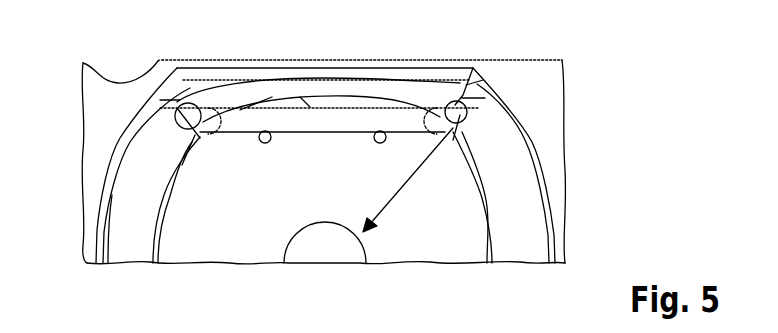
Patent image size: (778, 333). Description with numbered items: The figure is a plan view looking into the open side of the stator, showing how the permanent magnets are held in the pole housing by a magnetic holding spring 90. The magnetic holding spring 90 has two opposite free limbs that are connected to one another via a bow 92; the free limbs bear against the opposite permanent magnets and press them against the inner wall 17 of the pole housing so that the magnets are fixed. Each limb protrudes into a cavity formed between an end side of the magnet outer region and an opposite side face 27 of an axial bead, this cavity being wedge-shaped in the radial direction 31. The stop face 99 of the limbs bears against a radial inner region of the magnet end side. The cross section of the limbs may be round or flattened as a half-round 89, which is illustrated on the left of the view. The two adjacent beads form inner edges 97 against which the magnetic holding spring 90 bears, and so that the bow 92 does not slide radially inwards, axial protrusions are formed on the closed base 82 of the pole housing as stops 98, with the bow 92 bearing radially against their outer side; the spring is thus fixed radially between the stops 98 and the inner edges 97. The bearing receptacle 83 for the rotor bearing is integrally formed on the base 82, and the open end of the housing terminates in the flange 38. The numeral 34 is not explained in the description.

The inner wall 17 is at (281, 93).
The side face 27 is at (472, 67).
The radial direction 31 is at (415, 190).
The frame top edge 34 is at (160, 83).
The flange 38 is at (107, 100).
The closed base 82 is at (227, 243).
The bearing receptacle 83 is at (323, 243).
The half-round 89 is at (187, 103).
The magnetic holding spring 90 is at (318, 76).
The bow 92 is at (350, 123).
The inner edges 97 is at (219, 92).
The stops 98 is at (265, 143).
The stop face 99 is at (198, 110).